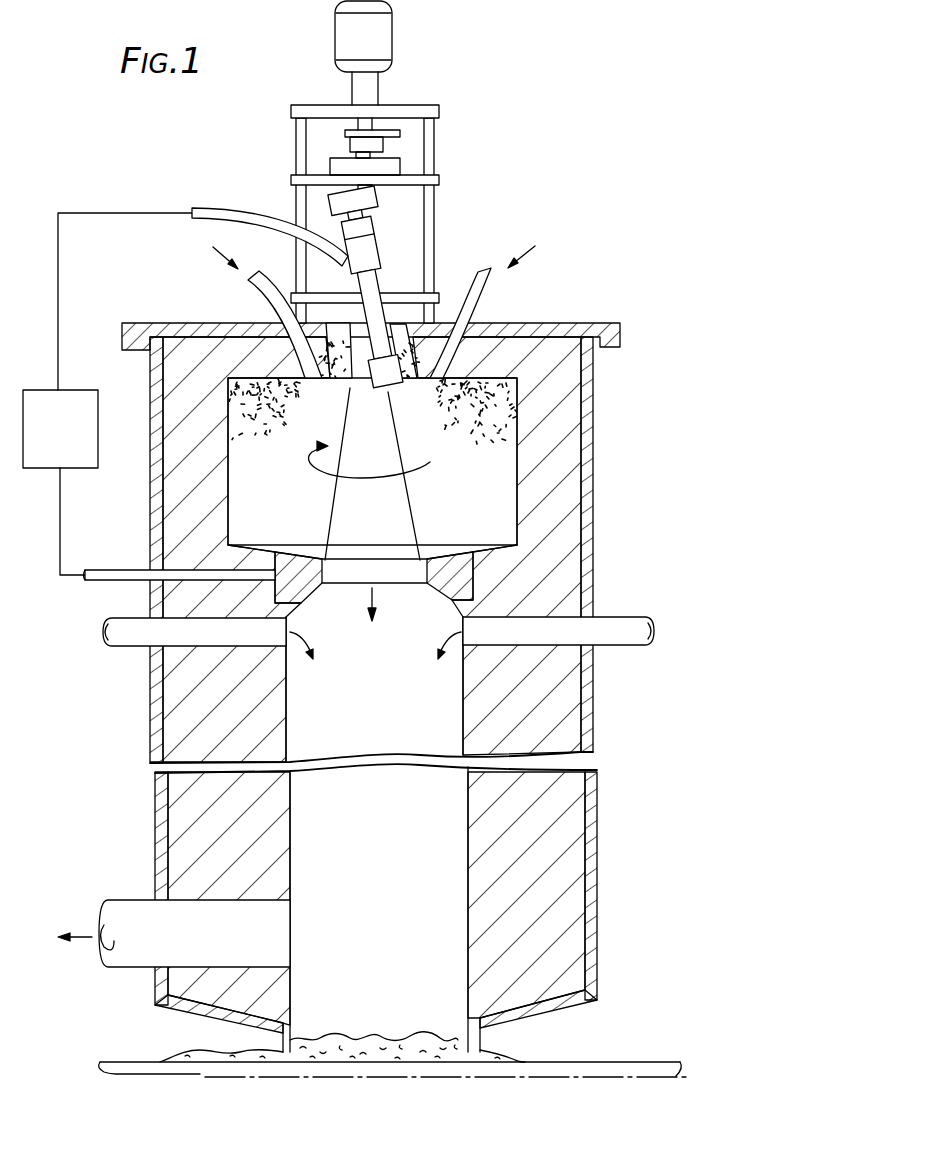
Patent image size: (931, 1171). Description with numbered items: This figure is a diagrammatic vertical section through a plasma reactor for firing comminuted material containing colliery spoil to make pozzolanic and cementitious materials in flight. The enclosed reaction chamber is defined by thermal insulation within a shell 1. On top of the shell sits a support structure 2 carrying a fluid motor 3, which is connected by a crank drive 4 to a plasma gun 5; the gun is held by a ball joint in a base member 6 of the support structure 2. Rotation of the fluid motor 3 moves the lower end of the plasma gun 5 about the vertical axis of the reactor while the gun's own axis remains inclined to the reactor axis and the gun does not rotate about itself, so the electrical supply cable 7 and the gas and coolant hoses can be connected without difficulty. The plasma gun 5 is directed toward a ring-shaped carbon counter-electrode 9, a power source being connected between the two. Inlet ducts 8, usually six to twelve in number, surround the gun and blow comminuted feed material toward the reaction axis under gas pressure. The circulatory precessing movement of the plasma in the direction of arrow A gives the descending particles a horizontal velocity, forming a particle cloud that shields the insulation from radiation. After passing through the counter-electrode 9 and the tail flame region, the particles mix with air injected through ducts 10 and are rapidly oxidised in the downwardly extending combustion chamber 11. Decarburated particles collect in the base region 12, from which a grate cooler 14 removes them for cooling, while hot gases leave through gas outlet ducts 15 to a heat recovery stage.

The shell 1 is at (594, 405).
The support structure 2 is at (439, 228).
The fluid motor 3 is at (384, 44).
The crank drive 4 is at (372, 200).
The plasma gun 5 is at (368, 282).
The base member 6 is at (330, 384).
The electrical supply cable 7 is at (226, 210).
The inlet ducts 8 is at (254, 287).
The ring-shaped carbon counter-electrode 9 is at (430, 557).
The air injection ducts 10 is at (180, 640).
The combustion chamber 11 is at (400, 699).
The base region 12 is at (452, 1009).
The grate cooler 14 is at (582, 1056).
The gas outlet ducts 15 is at (133, 918).
The direction of precessing plasma movement A is at (376, 459).